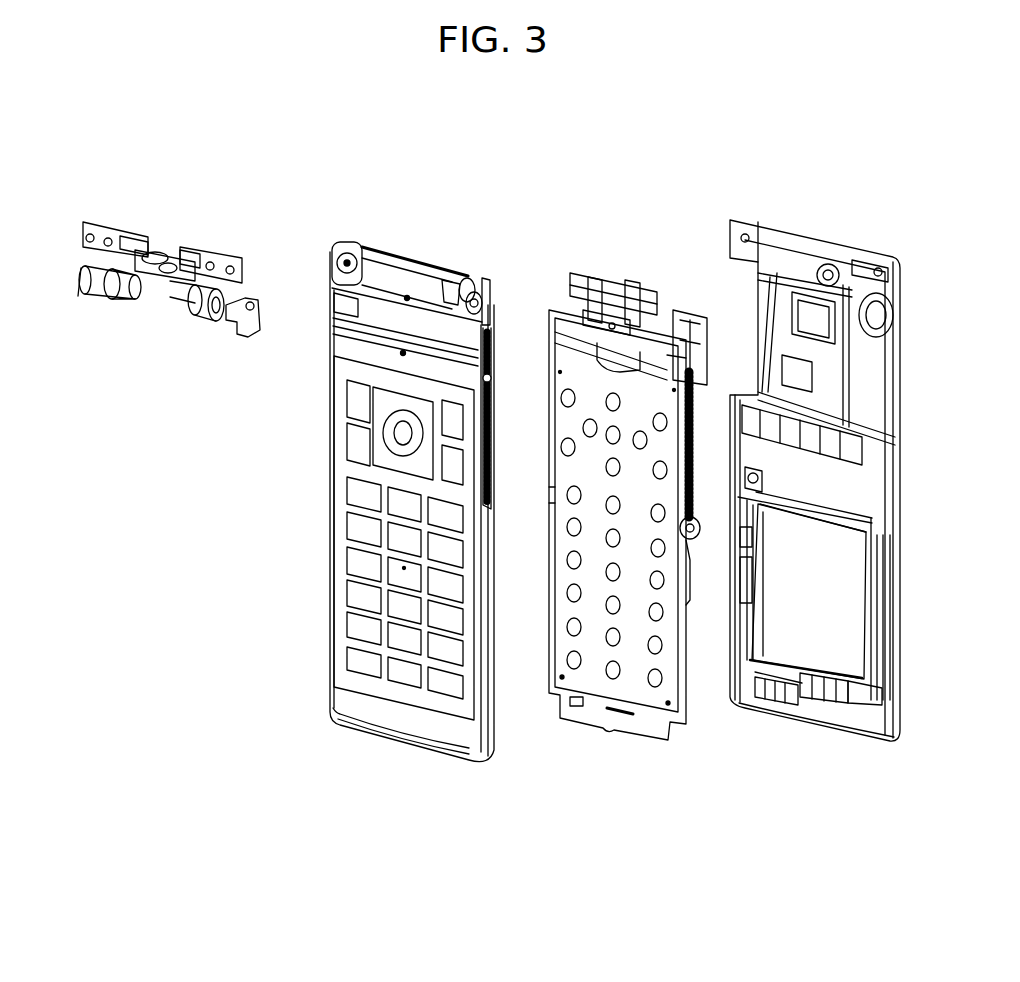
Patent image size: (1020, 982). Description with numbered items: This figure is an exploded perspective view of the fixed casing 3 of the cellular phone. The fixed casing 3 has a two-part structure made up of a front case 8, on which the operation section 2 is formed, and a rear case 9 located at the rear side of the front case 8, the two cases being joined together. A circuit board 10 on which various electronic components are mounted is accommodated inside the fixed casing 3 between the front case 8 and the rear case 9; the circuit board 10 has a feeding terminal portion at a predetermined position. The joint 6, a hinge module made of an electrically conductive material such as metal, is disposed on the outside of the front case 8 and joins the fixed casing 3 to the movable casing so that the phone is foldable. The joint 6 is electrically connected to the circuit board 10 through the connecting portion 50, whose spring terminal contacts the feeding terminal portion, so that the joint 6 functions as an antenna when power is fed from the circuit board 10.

The operation section 2 is at (360, 552).
The fixed casing 3 is at (734, 848).
The joint 6 is at (160, 252).
The front case 8 is at (483, 757).
The rear case 9 is at (747, 746).
The circuit board 10 is at (592, 388).
The connecting portion 50 is at (502, 369).